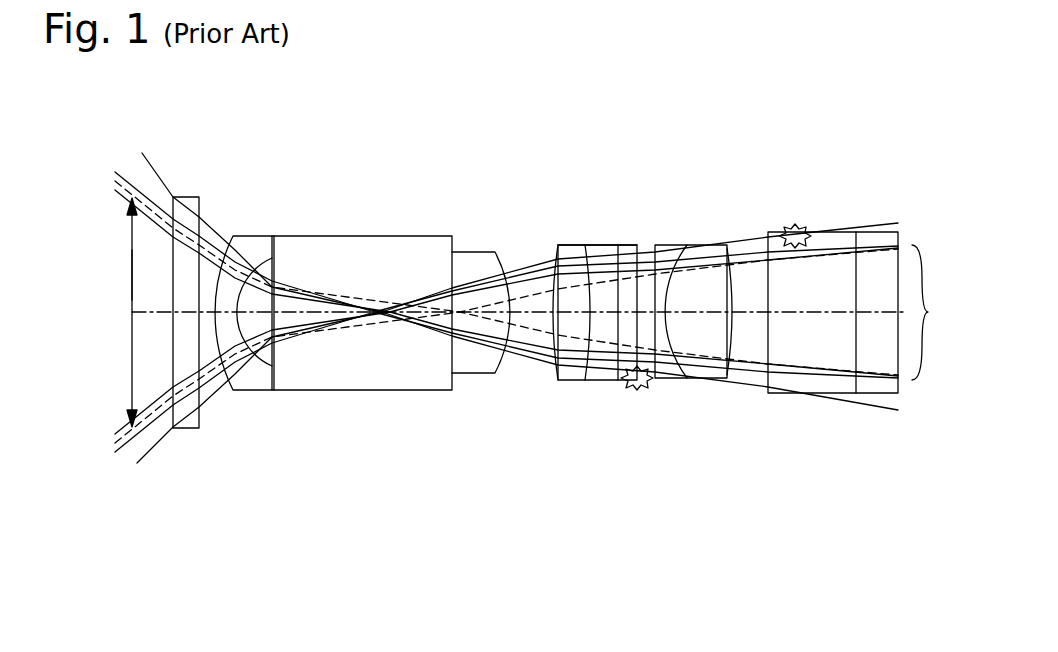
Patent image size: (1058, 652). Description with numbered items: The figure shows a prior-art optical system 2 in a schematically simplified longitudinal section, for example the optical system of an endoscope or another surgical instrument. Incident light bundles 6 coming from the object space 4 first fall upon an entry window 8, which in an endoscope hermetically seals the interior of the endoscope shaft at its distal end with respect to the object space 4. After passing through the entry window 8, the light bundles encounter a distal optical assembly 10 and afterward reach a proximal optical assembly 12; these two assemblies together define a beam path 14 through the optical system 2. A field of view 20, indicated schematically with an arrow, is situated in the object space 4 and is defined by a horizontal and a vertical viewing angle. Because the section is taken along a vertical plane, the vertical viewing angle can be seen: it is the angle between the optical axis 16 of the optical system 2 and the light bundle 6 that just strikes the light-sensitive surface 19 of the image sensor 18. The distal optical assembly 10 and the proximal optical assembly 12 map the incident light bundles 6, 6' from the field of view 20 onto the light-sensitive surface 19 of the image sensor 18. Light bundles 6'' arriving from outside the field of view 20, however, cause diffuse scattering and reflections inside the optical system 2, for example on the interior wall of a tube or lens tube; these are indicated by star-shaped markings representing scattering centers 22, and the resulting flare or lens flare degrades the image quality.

The optical system 2 is at (638, 136).
The object space 4 is at (98, 291).
The light bundle 6 is at (504, 241).
The light bundle 6' is at (475, 349).
The light bundle 6'' is at (517, 276).
The entry window 8 is at (196, 197).
The distal optical assembly 10 is at (440, 207).
The proximal optical assembly 12 is at (700, 219).
The beam path 14 is at (383, 290).
The optical axis 16 is at (155, 313).
The image sensor 18 is at (903, 235).
The light-sensitive surface 19 is at (937, 312).
The field of view 20 is at (132, 240).
The scattering centers 22 is at (802, 226).